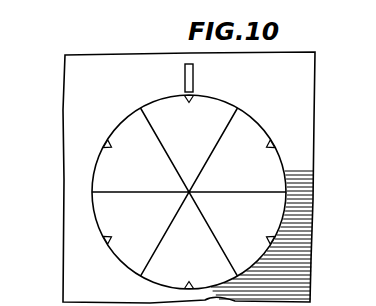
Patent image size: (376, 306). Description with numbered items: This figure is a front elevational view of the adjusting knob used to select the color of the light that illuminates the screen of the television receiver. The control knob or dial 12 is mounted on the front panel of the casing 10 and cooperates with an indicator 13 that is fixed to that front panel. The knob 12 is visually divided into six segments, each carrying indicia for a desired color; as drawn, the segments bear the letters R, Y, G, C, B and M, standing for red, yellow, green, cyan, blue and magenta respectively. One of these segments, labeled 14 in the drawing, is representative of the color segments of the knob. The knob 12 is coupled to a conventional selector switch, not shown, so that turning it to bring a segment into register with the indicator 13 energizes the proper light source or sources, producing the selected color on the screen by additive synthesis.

The casing 10 is at (77, 86).
The control knob 12 is at (97, 167).
The indicator 13 is at (194, 81).
The color sector 14 is at (112, 210).